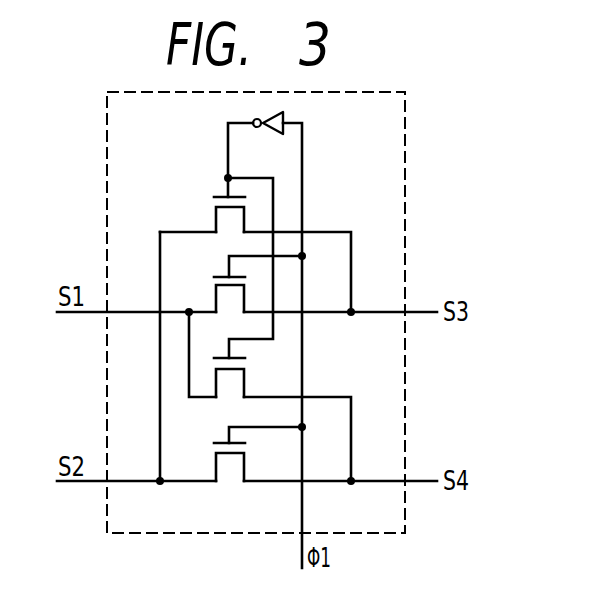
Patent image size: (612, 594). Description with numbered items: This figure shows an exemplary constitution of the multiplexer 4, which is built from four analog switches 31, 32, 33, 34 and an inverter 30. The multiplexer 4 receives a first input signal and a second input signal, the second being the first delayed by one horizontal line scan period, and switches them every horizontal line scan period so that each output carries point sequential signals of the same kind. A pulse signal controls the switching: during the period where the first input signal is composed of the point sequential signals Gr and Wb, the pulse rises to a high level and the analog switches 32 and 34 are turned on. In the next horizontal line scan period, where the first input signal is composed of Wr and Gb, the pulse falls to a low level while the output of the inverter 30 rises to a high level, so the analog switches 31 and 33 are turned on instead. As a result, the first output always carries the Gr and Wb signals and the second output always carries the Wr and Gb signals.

The multiplexer 4 is at (407, 133).
The inverter 30 is at (284, 113).
The analog switch 31 is at (208, 206).
The analog switch 32 is at (211, 292).
The analog switch 33 is at (253, 372).
The analog switch 34 is at (233, 473).